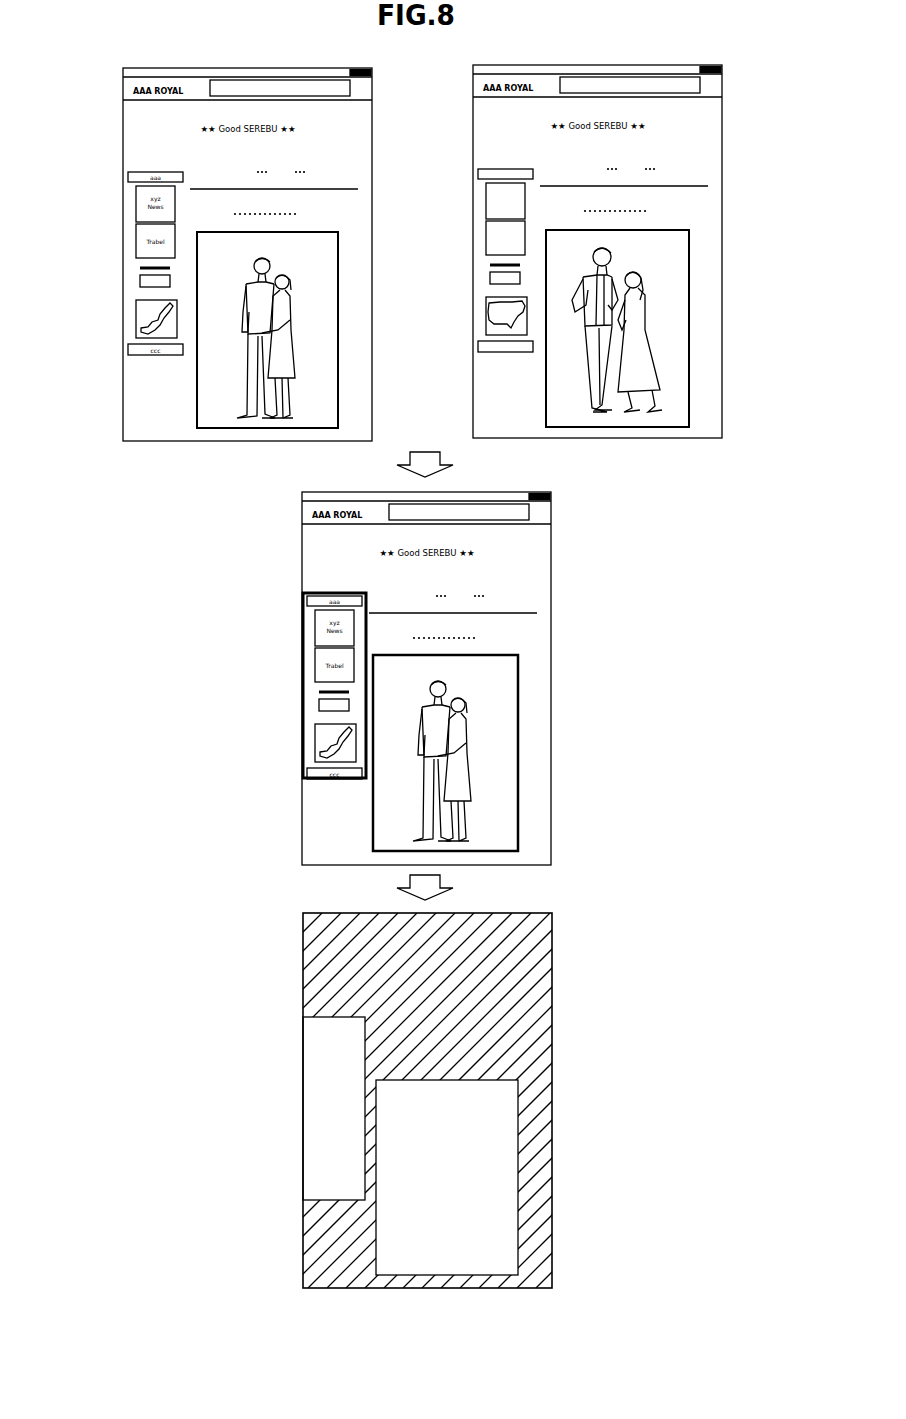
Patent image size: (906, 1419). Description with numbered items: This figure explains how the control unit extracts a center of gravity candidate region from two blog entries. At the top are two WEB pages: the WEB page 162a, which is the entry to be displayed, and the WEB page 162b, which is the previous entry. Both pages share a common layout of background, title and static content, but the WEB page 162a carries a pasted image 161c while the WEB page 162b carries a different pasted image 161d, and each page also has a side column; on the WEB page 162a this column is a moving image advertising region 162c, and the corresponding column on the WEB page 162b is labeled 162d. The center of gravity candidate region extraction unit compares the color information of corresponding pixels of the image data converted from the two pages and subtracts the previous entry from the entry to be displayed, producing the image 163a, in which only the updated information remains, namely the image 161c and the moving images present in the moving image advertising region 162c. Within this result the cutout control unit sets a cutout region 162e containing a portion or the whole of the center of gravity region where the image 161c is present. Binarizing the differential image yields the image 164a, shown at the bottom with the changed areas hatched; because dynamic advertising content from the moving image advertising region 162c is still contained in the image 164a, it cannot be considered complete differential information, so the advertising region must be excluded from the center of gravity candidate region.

The WEB page 162a is at (299, 68).
The WEB page 162b is at (649, 65).
The image 161c is at (338, 283).
The image 161d is at (689, 281).
The moving image advertising region 162c is at (130, 290).
The menu region of second web page 162d is at (477, 289).
The image 163a is at (477, 492).
The cutout region 162e is at (518, 748).
The image 164a is at (479, 913).